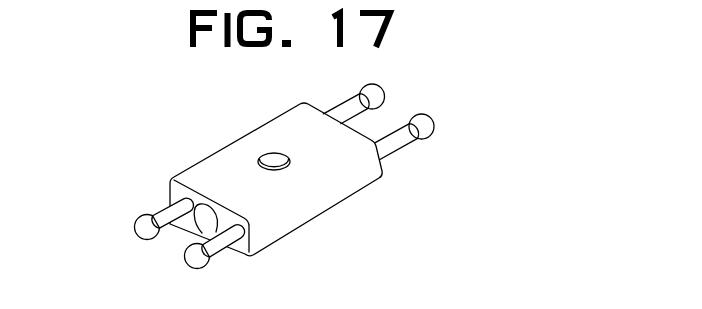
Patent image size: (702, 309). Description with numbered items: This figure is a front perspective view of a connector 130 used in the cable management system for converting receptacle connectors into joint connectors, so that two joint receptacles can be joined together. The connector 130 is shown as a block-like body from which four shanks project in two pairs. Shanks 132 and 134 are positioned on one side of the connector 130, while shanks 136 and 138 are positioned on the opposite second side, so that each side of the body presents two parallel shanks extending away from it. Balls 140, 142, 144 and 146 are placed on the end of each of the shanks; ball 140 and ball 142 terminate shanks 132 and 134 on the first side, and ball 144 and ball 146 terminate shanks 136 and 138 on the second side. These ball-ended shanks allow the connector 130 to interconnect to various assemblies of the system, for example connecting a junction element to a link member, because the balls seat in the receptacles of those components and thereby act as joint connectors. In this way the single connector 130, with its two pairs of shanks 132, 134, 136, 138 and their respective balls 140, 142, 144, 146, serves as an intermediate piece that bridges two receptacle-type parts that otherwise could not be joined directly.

The connector 130 is at (276, 182).
The shank 132 is at (350, 102).
The shank 134 is at (403, 146).
The shank 136 is at (160, 212).
The shank 138 is at (222, 250).
The ball 140 is at (383, 92).
The ball 142 is at (433, 128).
The ball 144 is at (136, 231).
The ball 146 is at (187, 261).